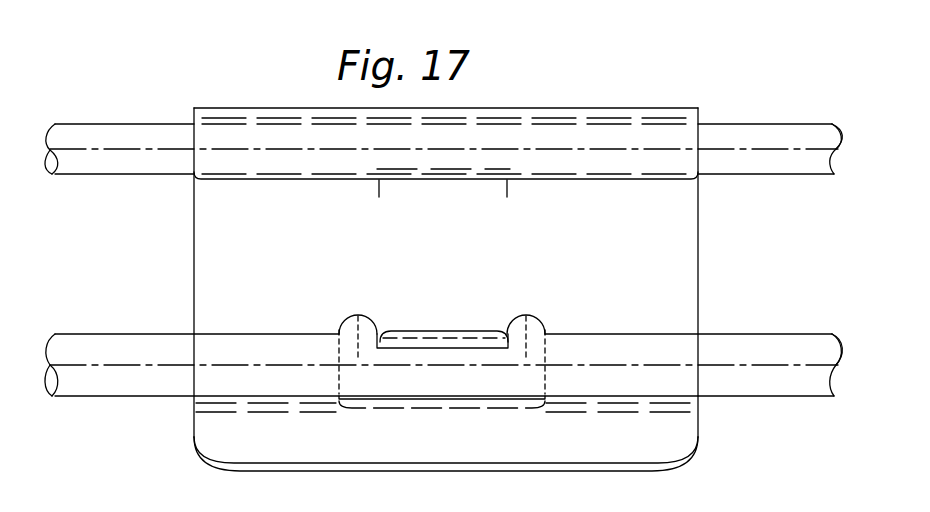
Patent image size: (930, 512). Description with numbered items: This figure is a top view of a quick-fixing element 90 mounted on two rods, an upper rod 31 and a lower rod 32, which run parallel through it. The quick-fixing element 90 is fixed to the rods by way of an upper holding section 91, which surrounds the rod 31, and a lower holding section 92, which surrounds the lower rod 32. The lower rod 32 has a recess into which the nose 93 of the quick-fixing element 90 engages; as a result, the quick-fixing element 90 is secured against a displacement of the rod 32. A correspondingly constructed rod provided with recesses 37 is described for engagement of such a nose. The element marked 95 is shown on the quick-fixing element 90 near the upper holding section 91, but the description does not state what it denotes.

The rod 31 is at (120, 140).
The lower rod 32 is at (93, 353).
The recesses 37 is at (700, 501).
The quick-fixing element 90 is at (550, 223).
The upper holding section 91 is at (655, 120).
The lower holding section 92 is at (670, 434).
The nose 93 is at (464, 347).
The retaining tabs 95 is at (388, 186).